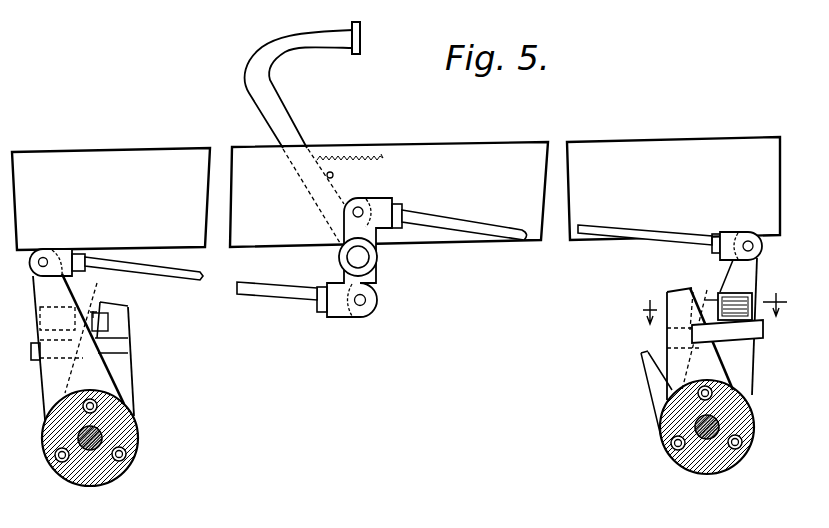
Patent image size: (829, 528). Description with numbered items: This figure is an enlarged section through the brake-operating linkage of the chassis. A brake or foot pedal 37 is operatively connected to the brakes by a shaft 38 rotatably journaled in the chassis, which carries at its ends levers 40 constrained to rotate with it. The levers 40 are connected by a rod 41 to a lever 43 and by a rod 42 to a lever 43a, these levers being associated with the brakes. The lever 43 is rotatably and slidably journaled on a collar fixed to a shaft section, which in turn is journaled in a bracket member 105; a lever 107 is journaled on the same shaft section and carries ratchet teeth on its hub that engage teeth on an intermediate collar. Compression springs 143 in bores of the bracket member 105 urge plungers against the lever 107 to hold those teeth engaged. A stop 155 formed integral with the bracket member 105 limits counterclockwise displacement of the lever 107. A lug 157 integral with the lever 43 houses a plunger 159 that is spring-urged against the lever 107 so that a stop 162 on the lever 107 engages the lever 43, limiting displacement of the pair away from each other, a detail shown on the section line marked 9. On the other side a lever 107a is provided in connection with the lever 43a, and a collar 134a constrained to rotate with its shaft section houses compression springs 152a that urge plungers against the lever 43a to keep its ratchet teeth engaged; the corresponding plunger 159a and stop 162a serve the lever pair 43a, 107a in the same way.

The brake pedal 37 is at (295, 137).
The shaft 38 is at (362, 257).
The levers 40 is at (367, 283).
The rod 41 is at (447, 220).
The rod 42 is at (277, 292).
The lever 43 is at (758, 265).
The lever 43a is at (67, 298).
The bracket member 105 is at (737, 463).
The lever 107 is at (681, 293).
The lever 107a is at (130, 333).
The collar 134a is at (135, 433).
The compression springs 143 is at (705, 385).
The compression springs 152a is at (123, 457).
The stop 155 is at (643, 352).
The lug 157 is at (750, 288).
The plunger 159 is at (707, 293).
The brake block 159a is at (111, 321).
The stop 162 is at (762, 338).
The band 162a is at (32, 345).
The section line 9- 9 is at (709, 308).